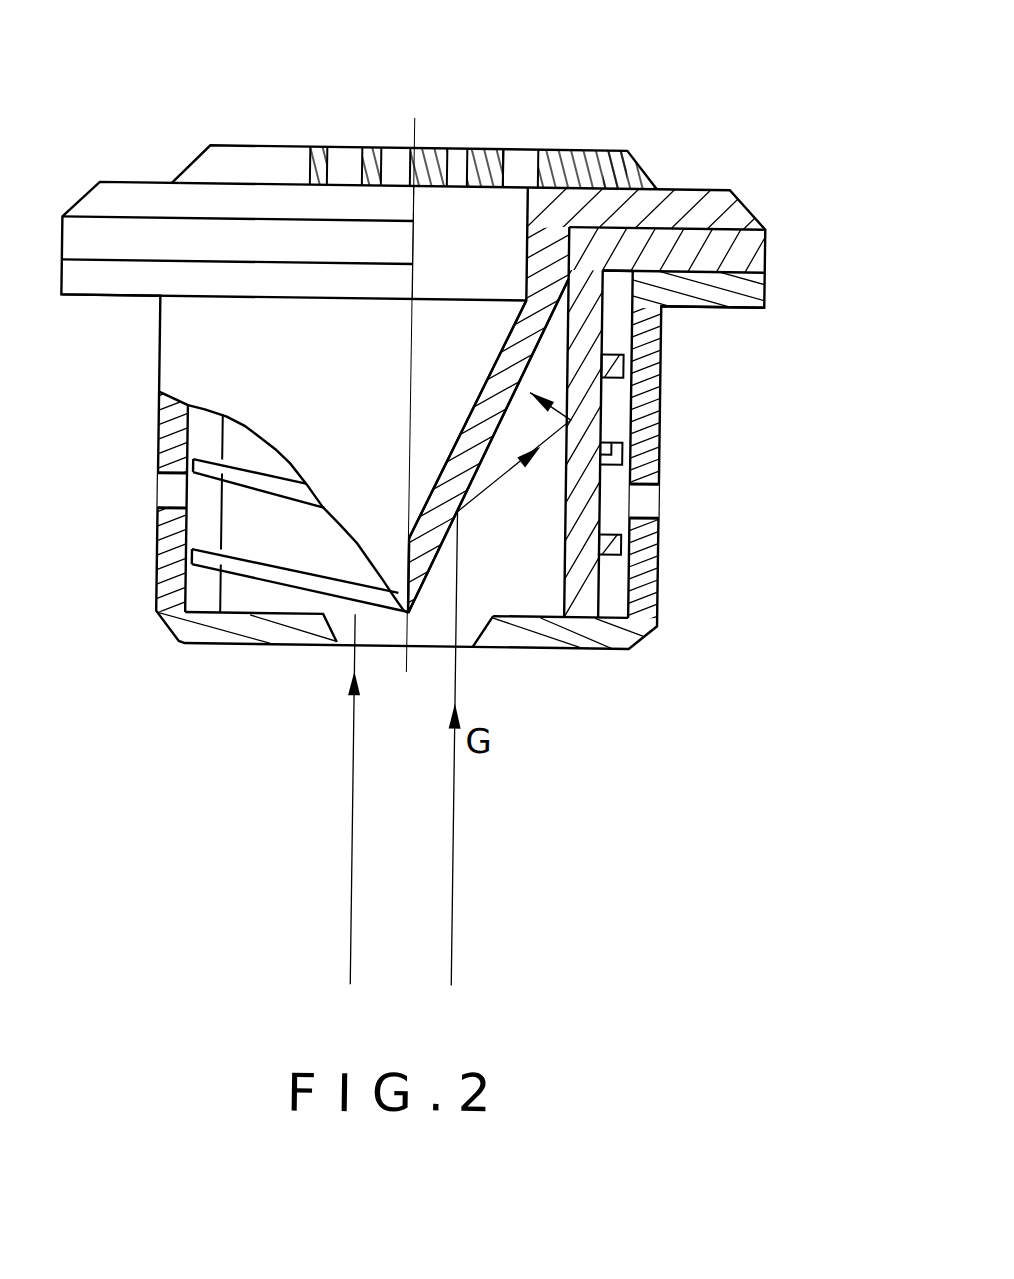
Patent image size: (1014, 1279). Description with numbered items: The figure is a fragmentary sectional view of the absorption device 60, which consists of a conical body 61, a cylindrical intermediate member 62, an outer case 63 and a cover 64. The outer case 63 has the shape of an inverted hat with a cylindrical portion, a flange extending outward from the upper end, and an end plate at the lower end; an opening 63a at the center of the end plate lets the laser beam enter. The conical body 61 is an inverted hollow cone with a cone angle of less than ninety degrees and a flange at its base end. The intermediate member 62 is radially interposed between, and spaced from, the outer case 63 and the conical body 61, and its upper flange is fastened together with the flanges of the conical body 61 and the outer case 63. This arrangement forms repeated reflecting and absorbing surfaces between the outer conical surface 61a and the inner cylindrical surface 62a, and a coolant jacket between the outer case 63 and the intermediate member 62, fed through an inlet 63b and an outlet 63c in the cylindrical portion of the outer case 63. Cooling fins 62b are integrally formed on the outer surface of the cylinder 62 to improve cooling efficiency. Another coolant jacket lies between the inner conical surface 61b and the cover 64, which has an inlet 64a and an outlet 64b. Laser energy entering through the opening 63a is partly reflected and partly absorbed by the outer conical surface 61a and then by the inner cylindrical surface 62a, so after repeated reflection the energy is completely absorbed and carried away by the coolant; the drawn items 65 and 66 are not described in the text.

The absorption device 60 is at (205, 680).
The conical body 61 is at (599, 204).
The outer conical surface 61a is at (548, 341).
The inner conical surface 61b is at (490, 379).
The cylindrical intermediate member 62 is at (666, 237).
The inner cylindrical surface 62a is at (613, 439).
The cooling fins 62b is at (180, 569).
The outer case 63 is at (600, 631).
The opening 63a is at (341, 629).
The inlet 63b is at (648, 500).
The outlet 63c is at (169, 494).
The cover 64 is at (240, 157).
The inlet 64a is at (479, 162).
The outlet 64b is at (342, 164).
The recess 65 is at (614, 301).
The chamber 66 is at (447, 210).